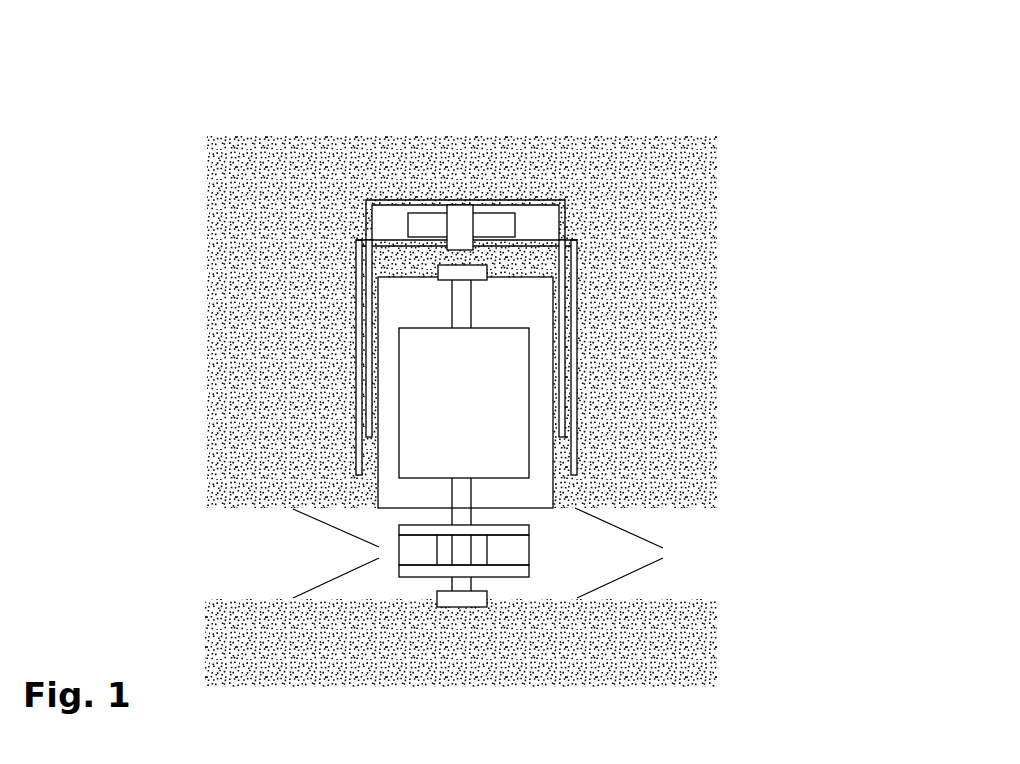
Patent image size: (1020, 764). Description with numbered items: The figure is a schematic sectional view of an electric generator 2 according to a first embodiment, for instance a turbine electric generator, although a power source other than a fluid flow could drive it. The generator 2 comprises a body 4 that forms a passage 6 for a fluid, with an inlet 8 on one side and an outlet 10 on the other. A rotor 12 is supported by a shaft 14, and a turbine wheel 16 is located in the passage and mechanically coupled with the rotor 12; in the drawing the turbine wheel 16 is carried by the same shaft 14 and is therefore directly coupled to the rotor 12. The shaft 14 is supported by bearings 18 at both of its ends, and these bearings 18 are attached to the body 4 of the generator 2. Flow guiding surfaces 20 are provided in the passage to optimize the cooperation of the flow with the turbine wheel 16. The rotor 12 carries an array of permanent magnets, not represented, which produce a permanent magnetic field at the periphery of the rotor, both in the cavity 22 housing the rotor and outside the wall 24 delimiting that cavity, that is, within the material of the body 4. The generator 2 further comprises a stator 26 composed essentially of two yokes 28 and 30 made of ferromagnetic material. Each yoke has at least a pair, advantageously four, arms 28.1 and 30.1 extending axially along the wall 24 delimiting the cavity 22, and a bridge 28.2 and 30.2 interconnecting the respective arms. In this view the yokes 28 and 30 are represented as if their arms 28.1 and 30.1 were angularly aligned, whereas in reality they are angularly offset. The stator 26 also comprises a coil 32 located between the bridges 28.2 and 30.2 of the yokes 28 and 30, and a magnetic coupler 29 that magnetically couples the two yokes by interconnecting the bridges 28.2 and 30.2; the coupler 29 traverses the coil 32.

The electric generator 2 is at (163, 118).
The body 4 is at (650, 353).
The passage 6 is at (370, 587).
The inlet 8 is at (238, 555).
The outlet 10 is at (685, 557).
The rotor 12 is at (500, 326).
The shaft 14 is at (470, 508).
The turbine wheel 16 is at (503, 556).
The bearings 18 is at (445, 278).
The flow guiding surfaces 20 is at (337, 580).
The cavity 22 is at (465, 392).
The wall 24 is at (380, 485).
The stator 26 is at (640, 122).
The yoke 28 is at (540, 175).
The arms 28.1 is at (367, 352).
The bridge 28.2 is at (380, 203).
The magnetic coupler 29 is at (462, 215).
The yoke 30 is at (633, 237).
The arms 30.1 is at (358, 407).
The bridge 30.2 is at (387, 243).
The coil 32 is at (437, 222).